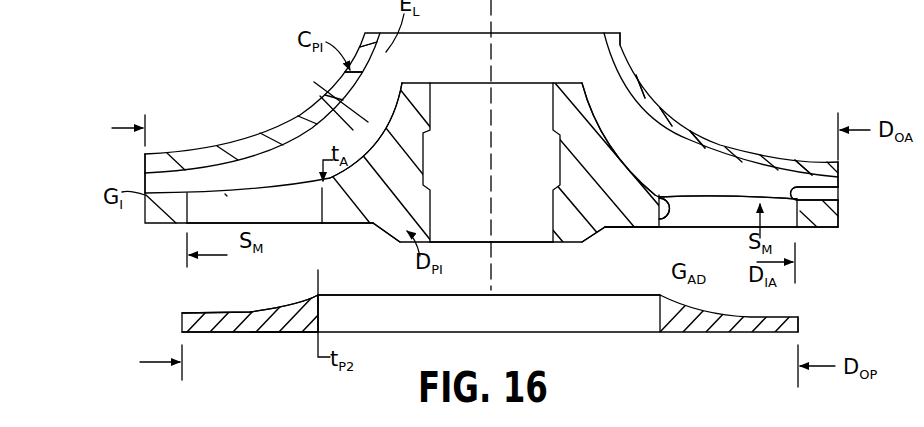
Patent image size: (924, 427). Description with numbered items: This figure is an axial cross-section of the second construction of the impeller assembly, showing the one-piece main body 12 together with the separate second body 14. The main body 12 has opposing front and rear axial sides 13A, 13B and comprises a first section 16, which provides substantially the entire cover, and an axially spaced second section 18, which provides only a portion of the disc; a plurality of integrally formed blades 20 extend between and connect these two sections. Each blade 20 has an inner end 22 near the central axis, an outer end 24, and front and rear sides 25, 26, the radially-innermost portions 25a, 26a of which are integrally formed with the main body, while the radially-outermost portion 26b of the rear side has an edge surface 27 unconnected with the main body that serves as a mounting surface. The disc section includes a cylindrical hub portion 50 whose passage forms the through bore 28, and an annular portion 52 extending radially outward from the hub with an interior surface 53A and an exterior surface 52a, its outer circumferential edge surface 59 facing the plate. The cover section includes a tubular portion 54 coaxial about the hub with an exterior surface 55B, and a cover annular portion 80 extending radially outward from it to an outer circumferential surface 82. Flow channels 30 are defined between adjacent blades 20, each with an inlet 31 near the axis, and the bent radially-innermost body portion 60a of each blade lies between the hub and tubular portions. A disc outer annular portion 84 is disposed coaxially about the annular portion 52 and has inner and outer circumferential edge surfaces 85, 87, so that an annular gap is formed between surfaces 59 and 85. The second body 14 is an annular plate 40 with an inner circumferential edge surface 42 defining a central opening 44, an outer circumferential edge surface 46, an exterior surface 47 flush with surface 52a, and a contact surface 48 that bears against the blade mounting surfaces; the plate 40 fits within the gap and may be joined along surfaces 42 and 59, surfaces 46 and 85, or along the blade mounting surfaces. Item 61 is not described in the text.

The main body 12 is at (160, 46).
The second body 14 is at (133, 318).
The first section 16 is at (688, 113).
The second section 18 is at (323, 226).
The blades 20 is at (281, 203).
The inner end 22 is at (382, 82).
The outer end 24 is at (143, 181).
The front side 25 is at (218, 160).
The radially-innermost portion of front side 25a is at (325, 92).
The rear side 26 is at (207, 197).
The radially-innermost portion of rear side 26a is at (387, 122).
The radially-outermost portion of rear side 26b is at (677, 201).
The edge surface 27 is at (225, 197).
The through bore 28 is at (520, 212).
The flow channels 30 is at (698, 175).
The inlet 31 is at (390, 94).
The annular plate 40 is at (226, 337).
The inner circumferential edge surface 42 is at (324, 312).
The central opening 44 is at (596, 313).
The outer circumferential edge surface 46 is at (801, 322).
The exterior surface 47 is at (265, 336).
The contact surface 48 is at (207, 311).
The hub portion 50 is at (400, 208).
The annular portion 52 is at (613, 222).
The exterior surface of disc annular portion 52a is at (600, 237).
The interior surface 53A is at (646, 190).
The tubular portion 54 is at (622, 51).
The exterior surface of tubular portion 55B is at (655, 99).
The outer circumferential edge surface of disc annular portion 59 is at (657, 196).
The radially-innermost body portion 60a is at (320, 104).
The left outer wall 61 is at (145, 158).
The cover annular portion 80 is at (782, 161).
The outer circumferential surface 82 is at (840, 170).
The disc outer annular portion 84 is at (816, 230).
The inner circumferential edge surface 85 is at (840, 194).
The outer circumferential edge surface 87 is at (840, 223).
The front axial side 13A is at (668, 105).
The rear axial side 13B is at (634, 232).